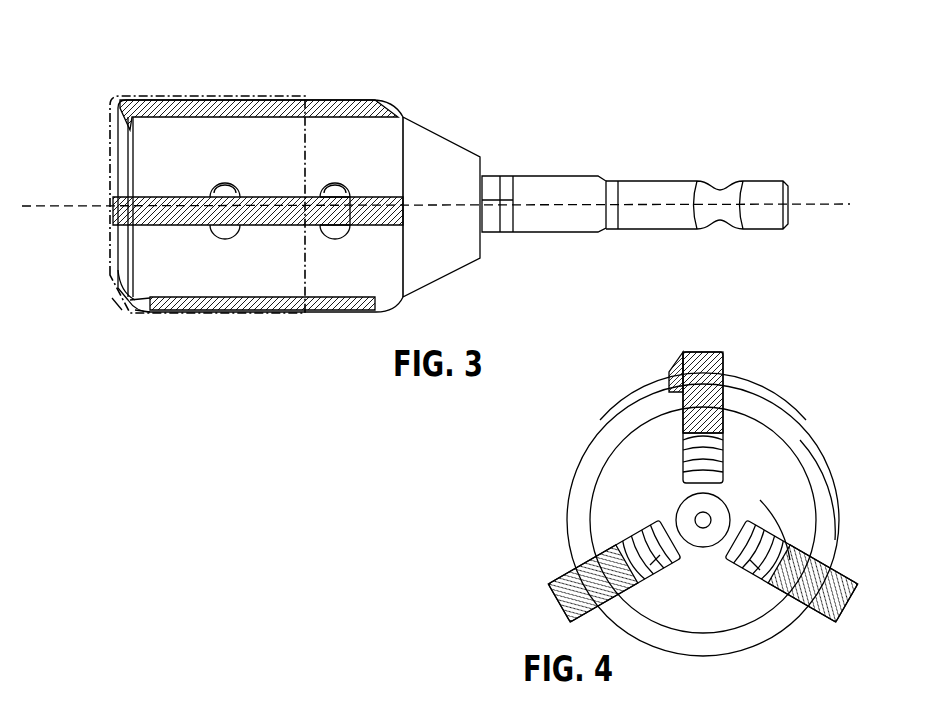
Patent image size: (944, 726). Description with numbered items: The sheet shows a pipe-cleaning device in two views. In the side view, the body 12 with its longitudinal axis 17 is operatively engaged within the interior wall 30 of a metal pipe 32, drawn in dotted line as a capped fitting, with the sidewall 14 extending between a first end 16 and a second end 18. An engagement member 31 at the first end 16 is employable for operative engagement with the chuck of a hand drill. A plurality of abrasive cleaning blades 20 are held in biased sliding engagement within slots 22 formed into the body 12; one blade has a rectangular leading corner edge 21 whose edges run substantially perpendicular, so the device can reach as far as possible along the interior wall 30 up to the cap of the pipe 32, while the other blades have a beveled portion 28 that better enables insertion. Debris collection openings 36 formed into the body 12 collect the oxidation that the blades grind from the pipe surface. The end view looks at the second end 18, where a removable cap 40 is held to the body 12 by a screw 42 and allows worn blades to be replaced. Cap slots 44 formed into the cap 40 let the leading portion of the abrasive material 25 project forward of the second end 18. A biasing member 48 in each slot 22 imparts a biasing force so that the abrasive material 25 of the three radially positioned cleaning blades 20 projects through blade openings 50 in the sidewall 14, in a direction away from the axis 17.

In FIG. 3, the body 12 is at (432, 132).
In FIG. 4, the body 12 is at (610, 421).
In FIG. 3, the sidewall 14 is at (397, 111).
In FIG. 4, the sidewall 14 is at (745, 387).
In FIG. 3, the first end 16 is at (492, 173).
In FIG. 3, the longitudinal axis 17 is at (44, 205).
In FIG. 3, the second end 18 is at (133, 128).
In FIG. 4, the second end 18 is at (806, 432).
In FIG. 3, the cleaning blades 20 is at (340, 99).
In FIG. 4, the cleaning blades 20 is at (684, 356).
In FIG. 3, the rectangular leading corner edge 21 is at (118, 98).
In FIG. 4, the slots 22 is at (763, 567).
In FIG. 4, the abrasive material 25 is at (668, 381).
In FIG. 3, the beveled portion 28 is at (140, 309).
In FIG. 3, the interior wall 30 is at (118, 305).
In FIG. 3, the engagement member 31 is at (545, 176).
In FIG. 3, the pipe 32 is at (148, 300).
In FIG. 3, the debris collection openings 36 is at (343, 188).
In FIG. 3, the cap 40 is at (127, 268).
In FIG. 4, the cap 40 is at (600, 499).
In FIG. 4, the screw 42 is at (677, 502).
In FIG. 4, the cap slots 44 is at (760, 517).
In FIG. 4, the biasing member 48 is at (719, 471).
In FIG. 3, the blade openings 50 is at (212, 188).